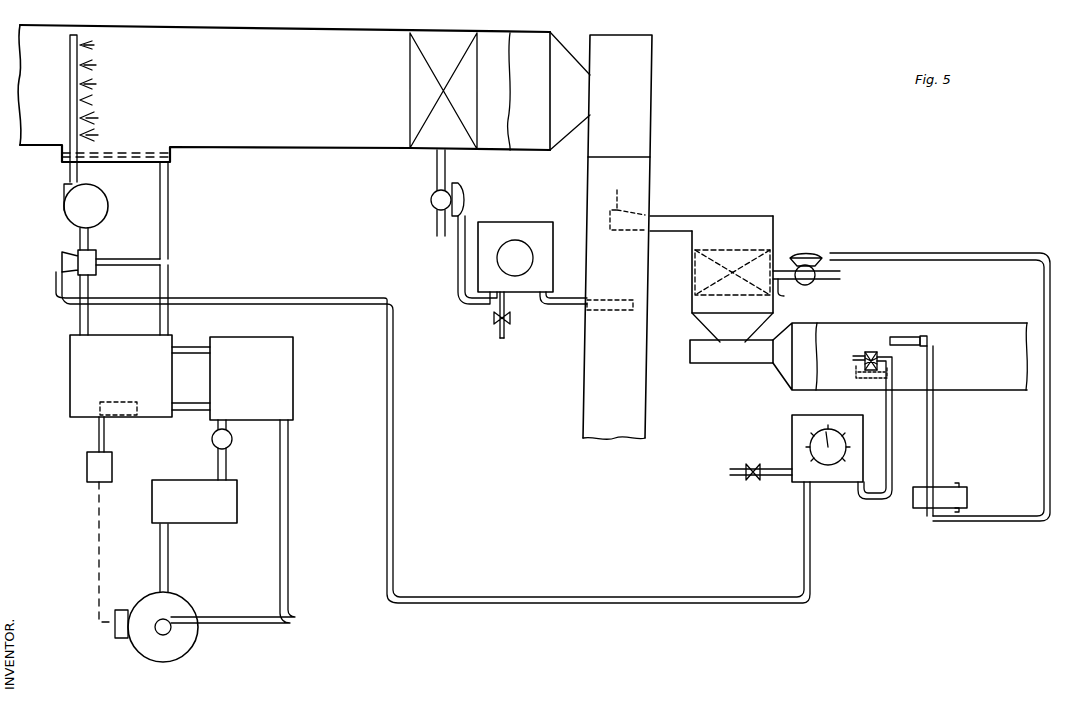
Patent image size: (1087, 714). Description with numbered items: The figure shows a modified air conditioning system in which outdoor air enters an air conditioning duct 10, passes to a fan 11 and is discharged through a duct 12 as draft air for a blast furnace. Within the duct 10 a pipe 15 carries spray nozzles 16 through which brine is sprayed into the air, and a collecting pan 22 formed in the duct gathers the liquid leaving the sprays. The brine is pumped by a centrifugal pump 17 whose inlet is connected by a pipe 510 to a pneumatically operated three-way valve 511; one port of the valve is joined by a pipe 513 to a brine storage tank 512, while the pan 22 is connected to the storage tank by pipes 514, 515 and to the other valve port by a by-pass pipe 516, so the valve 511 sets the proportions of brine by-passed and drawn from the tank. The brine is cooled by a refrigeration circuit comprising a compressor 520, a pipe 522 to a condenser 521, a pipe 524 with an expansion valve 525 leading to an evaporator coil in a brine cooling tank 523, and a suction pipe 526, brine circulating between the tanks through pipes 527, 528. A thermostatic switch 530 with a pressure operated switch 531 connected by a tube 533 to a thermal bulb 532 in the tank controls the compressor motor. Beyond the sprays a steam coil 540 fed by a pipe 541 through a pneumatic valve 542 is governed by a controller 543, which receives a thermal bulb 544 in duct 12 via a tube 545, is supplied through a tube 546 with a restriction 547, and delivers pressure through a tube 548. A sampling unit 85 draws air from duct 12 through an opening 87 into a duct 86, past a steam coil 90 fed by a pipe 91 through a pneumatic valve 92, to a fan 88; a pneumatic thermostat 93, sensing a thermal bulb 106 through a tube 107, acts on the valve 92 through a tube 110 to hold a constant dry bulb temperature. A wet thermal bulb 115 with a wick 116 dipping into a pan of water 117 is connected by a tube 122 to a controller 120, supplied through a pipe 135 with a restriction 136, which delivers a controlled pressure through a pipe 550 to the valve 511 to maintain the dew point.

The air conditioning duct 10 is at (326, 31).
The fan 11 is at (641, 103).
The duct 12 is at (637, 394).
The pipe 15 is at (69, 88).
The spray nozzles 16 is at (110, 78).
The centrifugal pump 17 is at (106, 203).
The collecting pan 22 is at (173, 158).
The sampling unit 85 is at (799, 215).
The duct 86 is at (774, 231).
The opening 87 is at (626, 202).
The fan 88 is at (712, 358).
The steam coil 90 is at (711, 292).
The pipe 91 is at (791, 292).
The pneumatic valve 92 is at (818, 253).
The pneumatic thermostat 93 is at (982, 498).
The thermal bulb 106 is at (932, 340).
The tube 107 is at (934, 417).
The tube 110 is at (1046, 413).
The thermal bulb 115 is at (853, 357).
The wick 116 is at (872, 350).
The pan of water 117 is at (856, 373).
The controller 120 is at (825, 415).
The tube 122 is at (880, 500).
The pipe 135 is at (736, 466).
The restriction 136 is at (753, 480).
The pipe 510 is at (90, 236).
The three-way valve 511 is at (62, 247).
The brine storage tank 512 is at (72, 372).
The pipe 513 is at (80, 319).
The pipe 514 is at (168, 226).
The pipe 515 is at (168, 279).
The by-pass pipe 516 is at (108, 268).
The compressor 520 is at (180, 650).
The condenser 521 is at (212, 521).
The pipe 522 is at (168, 559).
The brine cooling tank 523 is at (293, 399).
The pipe 524 is at (227, 459).
The expansion valve 525 is at (212, 440).
The pipe 526 is at (288, 530).
The pipe 527 is at (190, 345).
The pipe 528 is at (193, 394).
The thermostatic switch 530 is at (68, 468).
The pressure operated switch 531 is at (113, 465).
The thermal bulb 532 is at (122, 418).
The tube 533 is at (99, 432).
The steam coil 540 is at (412, 108).
The pipe 541 is at (437, 224).
The pneumatic valve 542 is at (468, 186).
The controller 543 is at (521, 218).
The thermal bulb 544 is at (614, 318).
The tube 545 is at (568, 310).
The tube 546 is at (504, 338).
The restriction 547 is at (495, 320).
The tube 548 is at (458, 248).
The pipe 550 is at (540, 595).